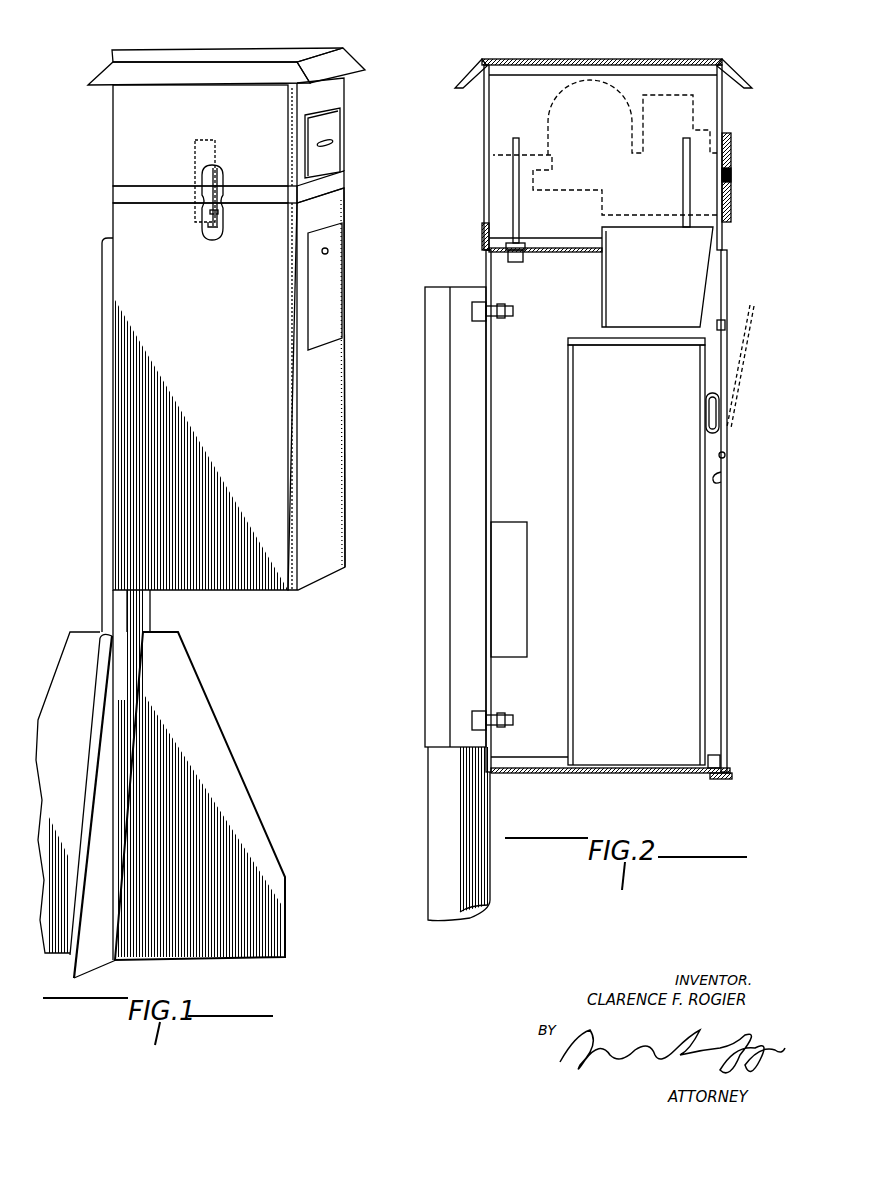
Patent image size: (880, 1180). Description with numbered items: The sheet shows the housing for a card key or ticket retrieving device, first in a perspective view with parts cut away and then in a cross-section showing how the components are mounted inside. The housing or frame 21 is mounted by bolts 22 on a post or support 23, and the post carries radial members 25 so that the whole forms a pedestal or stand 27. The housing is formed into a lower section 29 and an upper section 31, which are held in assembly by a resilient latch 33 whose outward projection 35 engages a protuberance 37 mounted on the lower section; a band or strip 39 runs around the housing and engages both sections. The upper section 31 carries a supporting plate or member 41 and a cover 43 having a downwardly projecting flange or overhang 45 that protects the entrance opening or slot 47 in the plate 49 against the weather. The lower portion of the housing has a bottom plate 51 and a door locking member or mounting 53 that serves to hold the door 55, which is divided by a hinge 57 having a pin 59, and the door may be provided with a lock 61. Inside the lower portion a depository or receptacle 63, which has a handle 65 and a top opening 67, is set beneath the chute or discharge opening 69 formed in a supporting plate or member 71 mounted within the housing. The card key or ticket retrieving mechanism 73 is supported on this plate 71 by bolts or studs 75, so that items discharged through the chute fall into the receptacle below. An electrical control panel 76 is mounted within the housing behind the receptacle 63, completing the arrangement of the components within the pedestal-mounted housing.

In FIG. 1, the housing 21 is at (100, 405).
In FIG. 2, the housing 21 is at (728, 565).
In FIG. 2, the bolts 22 is at (498, 318).
In FIG. 1, the post 23 is at (102, 592).
In FIG. 2, the post 23 is at (428, 797).
In FIG. 1, the radial members 25 is at (75, 635).
In FIG. 1, the pedestal 27 is at (223, 717).
In FIG. 1, the lower section 29 is at (337, 205).
In FIG. 2, the lower section 29 is at (491, 278).
In FIG. 1, the upper section 31 is at (125, 127).
In FIG. 2, the upper section 31 is at (484, 122).
In FIG. 1, the resilient latch 33 is at (210, 183).
In FIG. 1, the outward projection 35 is at (204, 227).
In FIG. 1, the protuberance 37 is at (214, 213).
In FIG. 1, the band 39 is at (148, 190).
In FIG. 2, the band 39 is at (482, 240).
In FIG. 2, the supporting plate 41 is at (662, 72).
In FIG. 1, the cover 43 is at (250, 53).
In FIG. 2, the cover 43 is at (578, 58).
In FIG. 1, the flange 45 is at (347, 67).
In FIG. 2, the flange 45 is at (735, 75).
In FIG. 1, the entrance opening 47 is at (333, 144).
In FIG. 2, the entrance opening 47 is at (731, 176).
In FIG. 1, the plate 49 is at (332, 122).
In FIG. 2, the plate 49 is at (731, 208).
In FIG. 2, the bottom plate 51 is at (545, 773).
In FIG. 2, the door locking member 53 is at (735, 777).
In FIG. 1, the door 55 is at (337, 418).
In FIG. 2, the door 55 is at (727, 520).
In FIG. 2, the hinge 57 is at (722, 478).
In FIG. 1, the pin 59 is at (310, 353).
In FIG. 2, the pin 59 is at (725, 455).
In FIG. 1, the lock 61 is at (328, 251).
In FIG. 2, the lock 61 is at (723, 322).
In FIG. 2, the depository 63 is at (568, 410).
In FIG. 2, the handle 65 is at (718, 413).
In FIG. 2, the top opening 67 is at (590, 337).
In FIG. 2, the chute 69 is at (703, 268).
In FIG. 2, the supporting plate 71 is at (578, 253).
In FIG. 2, the card key retrieving mechanism 73 is at (613, 85).
In FIG. 2, the bolts 75 is at (515, 140).
In FIG. 2, the electrical control panel 76 is at (528, 575).